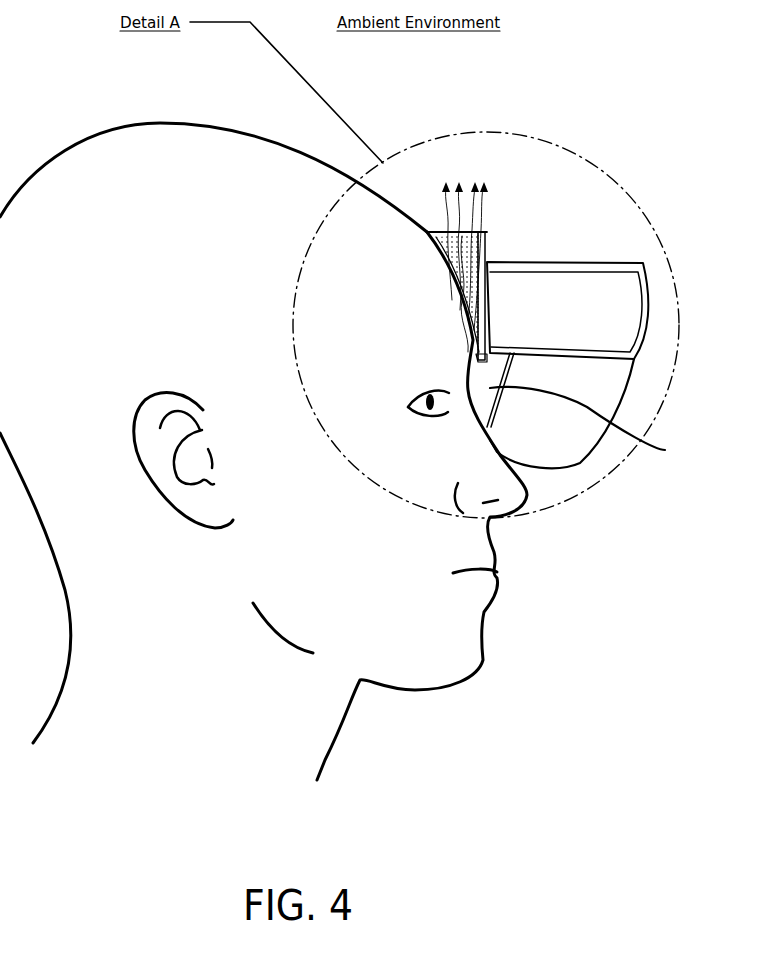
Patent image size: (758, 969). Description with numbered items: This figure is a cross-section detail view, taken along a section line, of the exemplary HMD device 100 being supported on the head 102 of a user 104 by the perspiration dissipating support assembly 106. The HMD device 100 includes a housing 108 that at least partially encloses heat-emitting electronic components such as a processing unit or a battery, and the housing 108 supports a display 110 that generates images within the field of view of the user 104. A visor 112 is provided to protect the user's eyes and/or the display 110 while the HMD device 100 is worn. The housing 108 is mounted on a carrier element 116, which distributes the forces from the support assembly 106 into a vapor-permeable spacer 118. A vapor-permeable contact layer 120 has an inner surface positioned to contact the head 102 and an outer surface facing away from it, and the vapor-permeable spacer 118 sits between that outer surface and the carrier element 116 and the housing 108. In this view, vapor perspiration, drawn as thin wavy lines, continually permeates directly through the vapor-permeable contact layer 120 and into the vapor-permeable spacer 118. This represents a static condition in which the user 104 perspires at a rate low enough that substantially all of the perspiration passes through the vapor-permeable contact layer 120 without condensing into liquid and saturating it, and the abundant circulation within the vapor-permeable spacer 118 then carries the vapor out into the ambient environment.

The HMD device 100 is at (590, 245).
The head 102 is at (152, 224).
The user 104 is at (535, 577).
The perspiration dissipating support assembly 106 is at (494, 218).
The housing 108 is at (645, 263).
The display 110 is at (665, 450).
The visor 112 is at (577, 457).
The carrier element 116 is at (497, 238).
The vapor-permeable spacer 118 is at (472, 298).
The vapor-permeable contact layer 120 is at (427, 232).